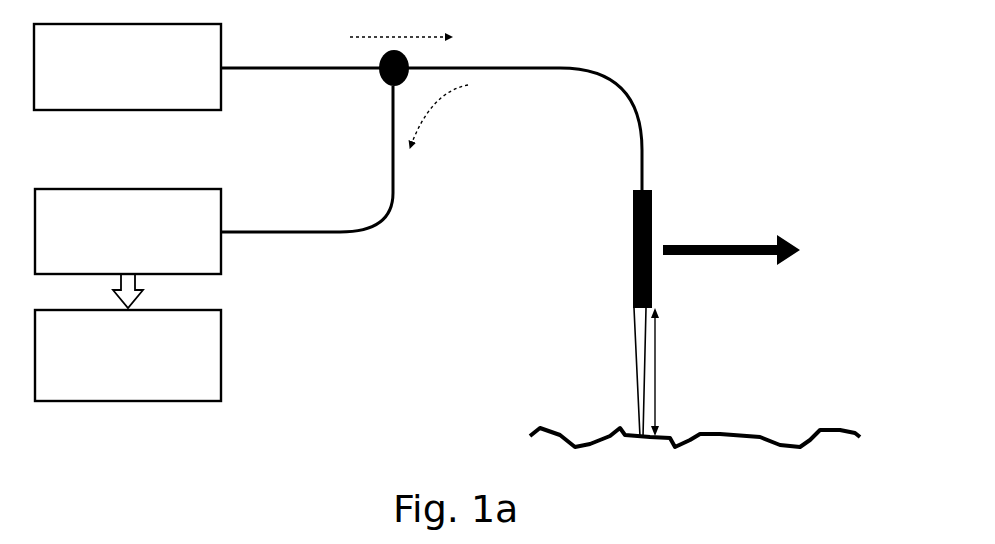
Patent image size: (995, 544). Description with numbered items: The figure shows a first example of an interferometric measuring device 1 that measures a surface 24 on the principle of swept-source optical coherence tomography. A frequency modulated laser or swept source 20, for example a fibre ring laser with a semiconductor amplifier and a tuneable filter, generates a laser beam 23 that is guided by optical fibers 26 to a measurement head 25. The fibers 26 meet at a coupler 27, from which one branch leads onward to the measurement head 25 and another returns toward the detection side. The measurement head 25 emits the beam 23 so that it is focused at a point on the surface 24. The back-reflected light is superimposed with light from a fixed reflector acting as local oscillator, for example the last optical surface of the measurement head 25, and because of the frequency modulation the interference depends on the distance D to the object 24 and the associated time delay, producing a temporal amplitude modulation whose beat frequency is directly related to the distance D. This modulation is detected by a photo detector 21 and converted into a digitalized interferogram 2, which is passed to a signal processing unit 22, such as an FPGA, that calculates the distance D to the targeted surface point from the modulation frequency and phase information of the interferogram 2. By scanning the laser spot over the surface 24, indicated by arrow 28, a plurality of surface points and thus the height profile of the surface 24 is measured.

The interferometric measuring device 1 is at (578, 31).
The digitalized interferogram 2 is at (130, 286).
The frequency modulated laser (swept source) 20 is at (127, 67).
The photo detector 21 is at (128, 231).
The signal processing unit 22 is at (128, 355).
The laser beam 23 is at (633, 368).
The surface 24 is at (778, 445).
The measurement head 25 is at (632, 238).
The optical fibers 26 is at (322, 63).
The fiber coupler 27 is at (375, 78).
The arrow (scanning) 28 is at (762, 245).
The distance D is at (658, 366).